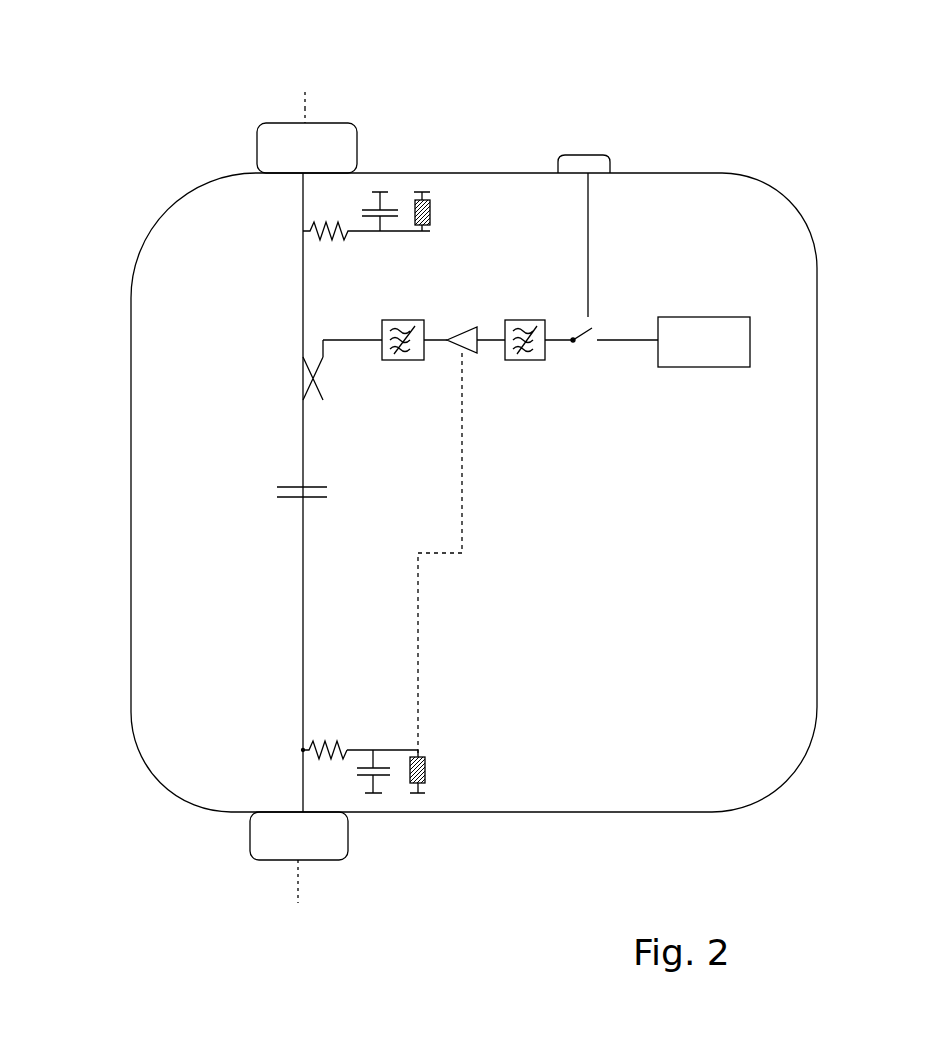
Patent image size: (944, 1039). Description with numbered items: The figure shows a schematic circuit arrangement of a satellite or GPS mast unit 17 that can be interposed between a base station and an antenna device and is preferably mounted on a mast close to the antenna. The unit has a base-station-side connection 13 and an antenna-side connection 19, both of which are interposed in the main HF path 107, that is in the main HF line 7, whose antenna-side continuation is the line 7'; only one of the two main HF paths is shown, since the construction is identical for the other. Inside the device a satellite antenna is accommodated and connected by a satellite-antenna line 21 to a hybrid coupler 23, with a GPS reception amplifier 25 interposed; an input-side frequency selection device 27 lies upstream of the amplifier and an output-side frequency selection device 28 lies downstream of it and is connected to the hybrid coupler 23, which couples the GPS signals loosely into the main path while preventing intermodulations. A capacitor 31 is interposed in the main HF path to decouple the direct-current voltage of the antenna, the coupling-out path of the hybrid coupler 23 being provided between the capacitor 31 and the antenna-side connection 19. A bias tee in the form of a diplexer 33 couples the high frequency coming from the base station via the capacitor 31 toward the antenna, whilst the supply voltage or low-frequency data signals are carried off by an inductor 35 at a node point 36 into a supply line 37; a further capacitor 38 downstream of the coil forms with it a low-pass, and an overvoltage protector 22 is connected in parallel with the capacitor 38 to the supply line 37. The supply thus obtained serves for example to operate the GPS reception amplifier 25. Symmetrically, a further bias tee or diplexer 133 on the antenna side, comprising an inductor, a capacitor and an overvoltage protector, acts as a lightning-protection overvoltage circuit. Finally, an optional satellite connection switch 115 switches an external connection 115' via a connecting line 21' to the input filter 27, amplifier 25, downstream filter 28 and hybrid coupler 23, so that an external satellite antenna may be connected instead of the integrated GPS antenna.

The main HF line 7' is at (205, 72).
The main HF line 7 is at (368, 906).
The main HF path 107 is at (305, 92).
The antenna-side connection 19 is at (343, 132).
The diplexer 133 is at (360, 250).
The external connection 115' is at (640, 151).
The connecting line 21' is at (630, 245).
The satellite connection switch 115 is at (632, 302).
The satellite-antenna line 21 is at (685, 379).
The GPS reception amplifier 25 is at (476, 330).
The input-side frequency selection device 27 is at (535, 360).
The output-side frequency selection device 28 is at (395, 360).
The hybrid coupler 23 is at (285, 382).
The capacitor 31 is at (266, 493).
The diplexer 33 is at (350, 702).
The inductor 35 is at (345, 748).
The node point 36 is at (301, 752).
The supply line 37 is at (470, 675).
The overvoltage protector 22 is at (427, 760).
The capacitor 38 is at (395, 795).
The base-station-side connection 13 is at (262, 853).
The GPS mast unit 17 is at (748, 765).